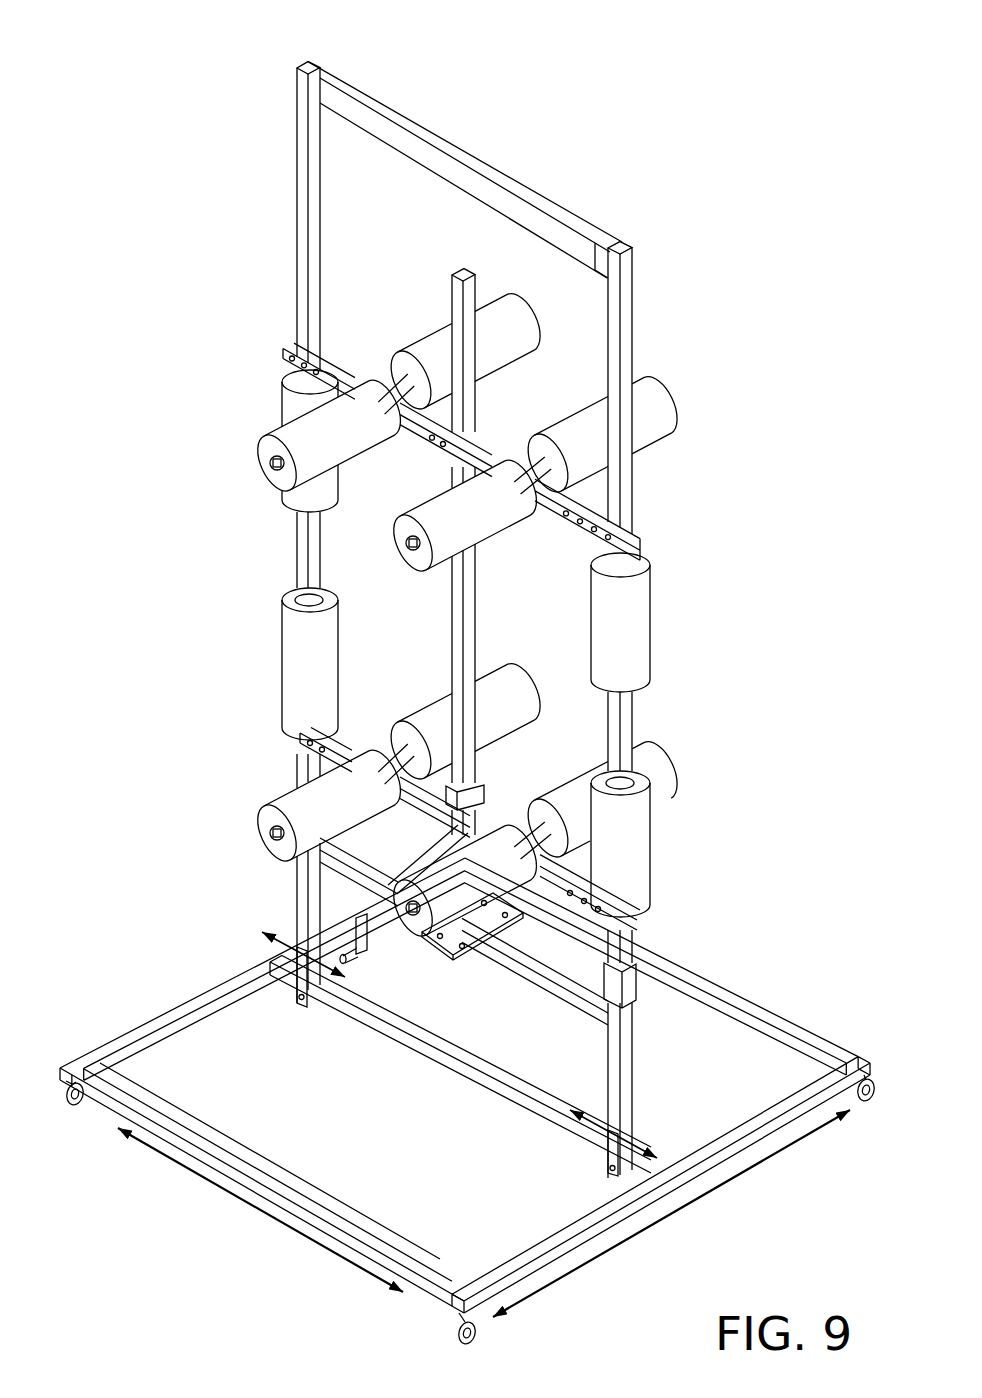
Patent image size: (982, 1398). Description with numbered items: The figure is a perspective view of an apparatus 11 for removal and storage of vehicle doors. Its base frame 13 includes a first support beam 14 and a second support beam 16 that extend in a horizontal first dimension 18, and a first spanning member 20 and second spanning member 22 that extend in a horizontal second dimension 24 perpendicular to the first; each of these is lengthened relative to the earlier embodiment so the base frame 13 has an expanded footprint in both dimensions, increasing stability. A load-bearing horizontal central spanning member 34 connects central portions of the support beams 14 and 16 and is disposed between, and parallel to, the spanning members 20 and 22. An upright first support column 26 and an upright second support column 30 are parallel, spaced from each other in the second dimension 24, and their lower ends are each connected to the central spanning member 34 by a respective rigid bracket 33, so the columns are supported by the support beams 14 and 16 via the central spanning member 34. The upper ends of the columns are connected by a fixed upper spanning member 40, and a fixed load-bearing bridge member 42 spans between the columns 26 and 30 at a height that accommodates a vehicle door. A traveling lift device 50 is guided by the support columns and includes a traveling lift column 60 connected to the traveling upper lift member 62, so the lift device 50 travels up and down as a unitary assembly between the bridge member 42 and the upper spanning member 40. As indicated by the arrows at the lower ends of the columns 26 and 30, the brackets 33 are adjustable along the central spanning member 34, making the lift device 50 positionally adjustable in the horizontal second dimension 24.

The apparatus 11 is at (272, 128).
The base frame 13 is at (176, 974).
The first support beam 14 is at (105, 1043).
The second support beam 16 is at (542, 1240).
The horizontal first dimension 18 is at (695, 1203).
The first spanning member 20 is at (274, 1165).
The second spanning member 22 is at (734, 996).
The horizontal second dimension 24 is at (263, 1212).
The first support column 26 is at (297, 238).
The second support column 30 is at (633, 318).
The rigid bracket 33 is at (297, 982).
The central spanning member 34 is at (417, 1058).
The upper spanning member 40 is at (588, 222).
The bridge member 42 is at (545, 977).
The lift device 50 is at (412, 292).
The lift column 60 is at (477, 295).
The upper lift member 62 is at (552, 512).